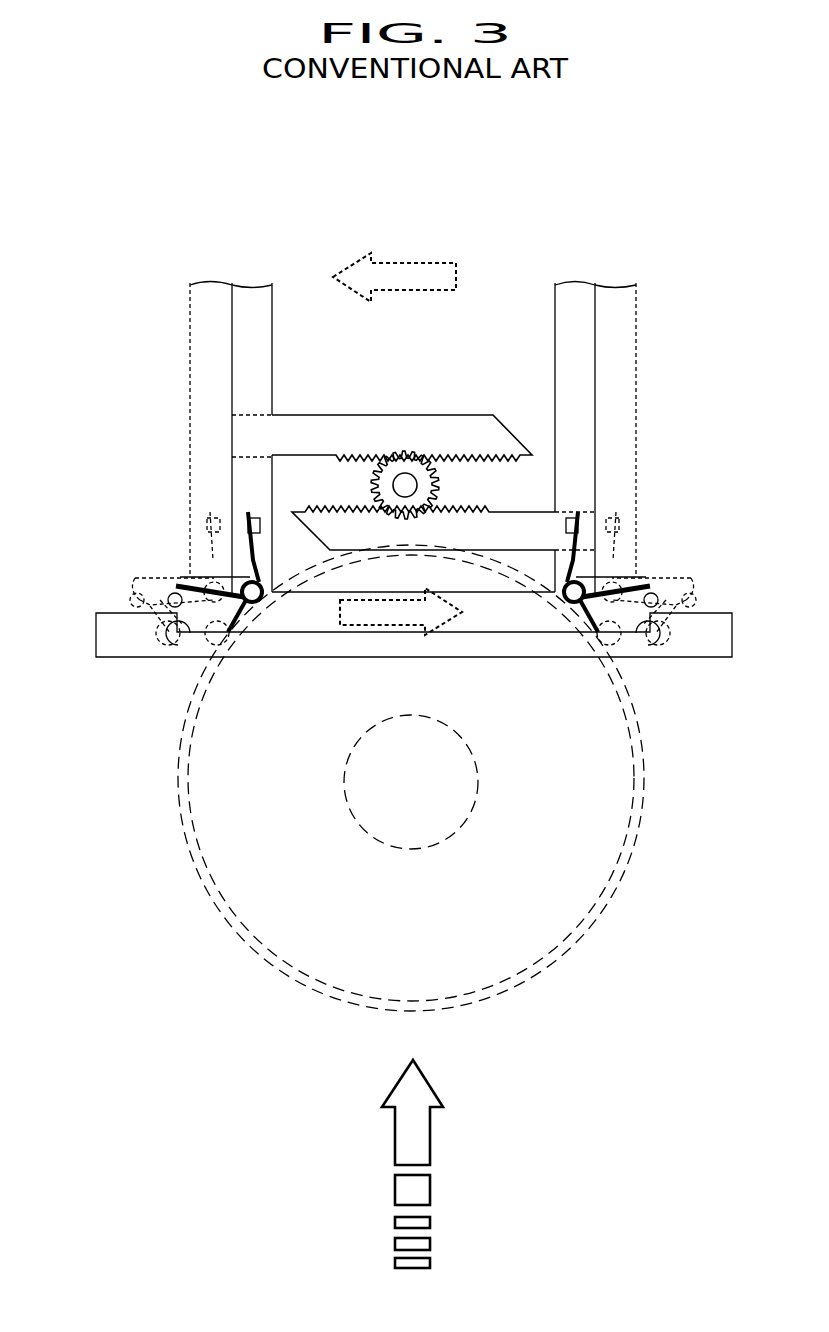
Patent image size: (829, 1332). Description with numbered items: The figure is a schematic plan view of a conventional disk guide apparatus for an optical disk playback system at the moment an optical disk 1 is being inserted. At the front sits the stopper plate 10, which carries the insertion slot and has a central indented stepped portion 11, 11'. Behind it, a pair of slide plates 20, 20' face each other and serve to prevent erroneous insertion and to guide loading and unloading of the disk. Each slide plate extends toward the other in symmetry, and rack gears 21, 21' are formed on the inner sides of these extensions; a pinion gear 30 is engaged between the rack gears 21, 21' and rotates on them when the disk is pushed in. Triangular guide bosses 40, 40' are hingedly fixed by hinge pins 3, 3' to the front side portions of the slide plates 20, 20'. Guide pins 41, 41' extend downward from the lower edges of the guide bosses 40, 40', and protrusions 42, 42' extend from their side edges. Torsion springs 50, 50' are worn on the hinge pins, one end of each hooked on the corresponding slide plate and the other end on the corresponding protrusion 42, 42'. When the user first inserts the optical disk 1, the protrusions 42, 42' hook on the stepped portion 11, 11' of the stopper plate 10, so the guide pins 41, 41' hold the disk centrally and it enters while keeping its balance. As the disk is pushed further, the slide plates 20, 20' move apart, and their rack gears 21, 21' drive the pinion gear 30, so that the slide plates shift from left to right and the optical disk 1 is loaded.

The optical disk 1 is at (636, 820).
The hinge pin 3 is at (244, 662).
The hinge pin 3' is at (583, 662).
The stopper plate 10 is at (108, 645).
The stepped portion 11 is at (128, 688).
The stepped portion 11' is at (705, 688).
The slide plate 20 is at (330, 438).
The slide plate 20' is at (641, 438).
The rack gear 21 is at (402, 411).
The rack gear 21' is at (423, 510).
The pinion gear 30 is at (392, 465).
The guide boss 40 is at (152, 539).
The guide boss 40' is at (675, 540).
The guide pin 41 is at (183, 684).
The guide pin 41' is at (644, 684).
The protrusion 42 is at (110, 566).
The protrusion 42' is at (722, 566).
The torsion spring 50 is at (182, 499).
The torsion spring 50' is at (643, 501).